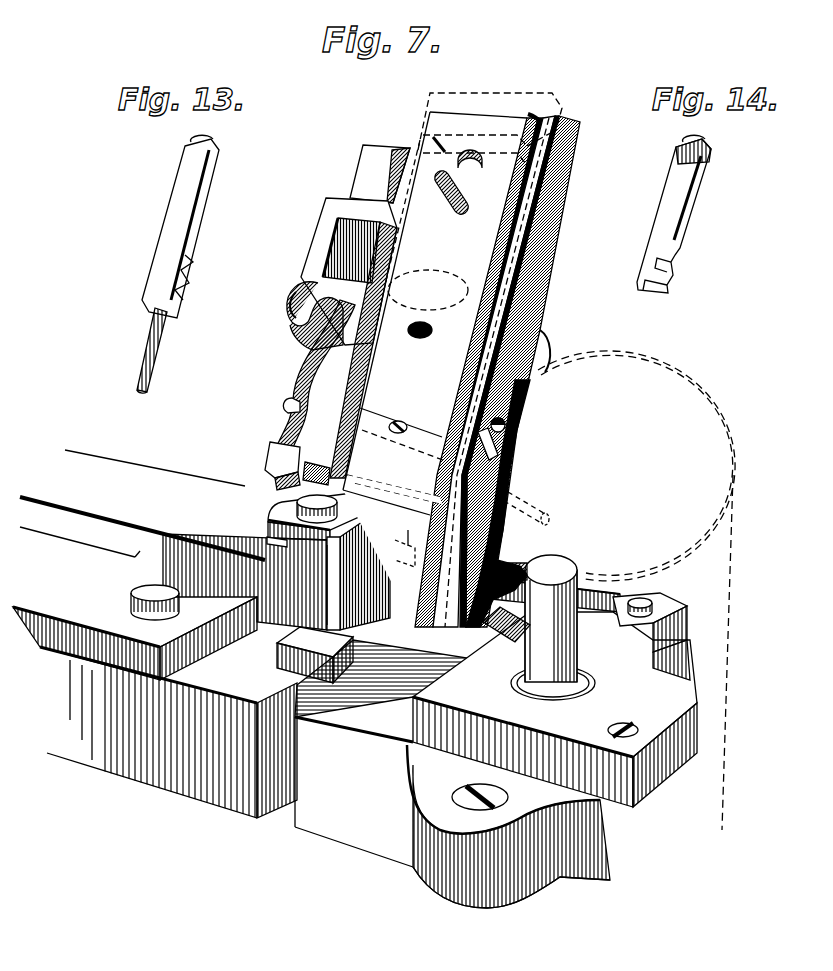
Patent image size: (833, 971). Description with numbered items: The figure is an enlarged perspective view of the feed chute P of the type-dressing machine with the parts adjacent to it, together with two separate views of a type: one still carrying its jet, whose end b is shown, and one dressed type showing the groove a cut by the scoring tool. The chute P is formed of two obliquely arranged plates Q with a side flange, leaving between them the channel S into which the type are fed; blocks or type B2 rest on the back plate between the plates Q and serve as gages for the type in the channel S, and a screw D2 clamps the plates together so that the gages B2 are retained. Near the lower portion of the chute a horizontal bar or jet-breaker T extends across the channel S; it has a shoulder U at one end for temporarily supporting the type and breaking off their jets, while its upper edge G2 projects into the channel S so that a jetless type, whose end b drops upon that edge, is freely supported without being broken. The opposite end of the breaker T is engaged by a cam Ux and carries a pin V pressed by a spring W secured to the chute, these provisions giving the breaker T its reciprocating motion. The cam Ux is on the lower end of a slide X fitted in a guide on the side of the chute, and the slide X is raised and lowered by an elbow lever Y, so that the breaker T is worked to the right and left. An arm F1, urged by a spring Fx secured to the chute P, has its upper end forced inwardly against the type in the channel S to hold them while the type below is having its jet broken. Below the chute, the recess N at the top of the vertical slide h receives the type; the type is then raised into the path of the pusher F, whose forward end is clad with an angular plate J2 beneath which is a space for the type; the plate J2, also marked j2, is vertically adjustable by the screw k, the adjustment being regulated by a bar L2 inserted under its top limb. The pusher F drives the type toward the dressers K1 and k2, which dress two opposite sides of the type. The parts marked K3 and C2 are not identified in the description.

In FIG. 7, the horizontal recess N is at (452, 774).
In FIG. 7, the pusher F is at (183, 634).
In FIG. 7, the angular plate J2 is at (280, 507).
In FIG. 7, the bar L2 is at (275, 540).
In FIG. 7, the angular plate j2 is at (330, 590).
In FIG. 7, the adjusting screw k is at (350, 480).
In FIG. 7, the dresser K1 is at (555, 681).
In FIG. 7, the screw K3 is at (611, 725).
In FIG. 7, the dresser k2 is at (498, 628).
In FIG. 7, the feed chute P is at (493, 212).
In FIG. 7, the channel S is at (520, 167).
In FIG. 7, the vertical slide h is at (528, 303).
In FIG. 7, the type-holding arm F1 is at (493, 337).
In FIG. 7, the spring Fx is at (522, 335).
In FIG. 7, the chute plates Q is at (482, 102).
In FIG. 7, the gage blocks B2 is at (437, 138).
In FIG. 7, the pin C2 is at (470, 170).
In FIG. 7, the clamping screw D2 is at (428, 304).
In FIG. 7, the upper edge of jet-breaker G2 is at (412, 432).
In FIG. 7, the slide X is at (330, 250).
In FIG. 7, the elbow lever Y is at (296, 314).
In FIG. 7, the spring W is at (350, 392).
In FIG. 7, the pin V is at (290, 408).
In FIG. 7, the cam Ux is at (275, 452).
In FIG. 7, the jet-breaker bar T is at (322, 476).
In FIG. 7, the shoulder U is at (440, 482).
In FIG. 13, the end of type b is at (150, 308).
In FIG. 14, the groove a is at (660, 305).